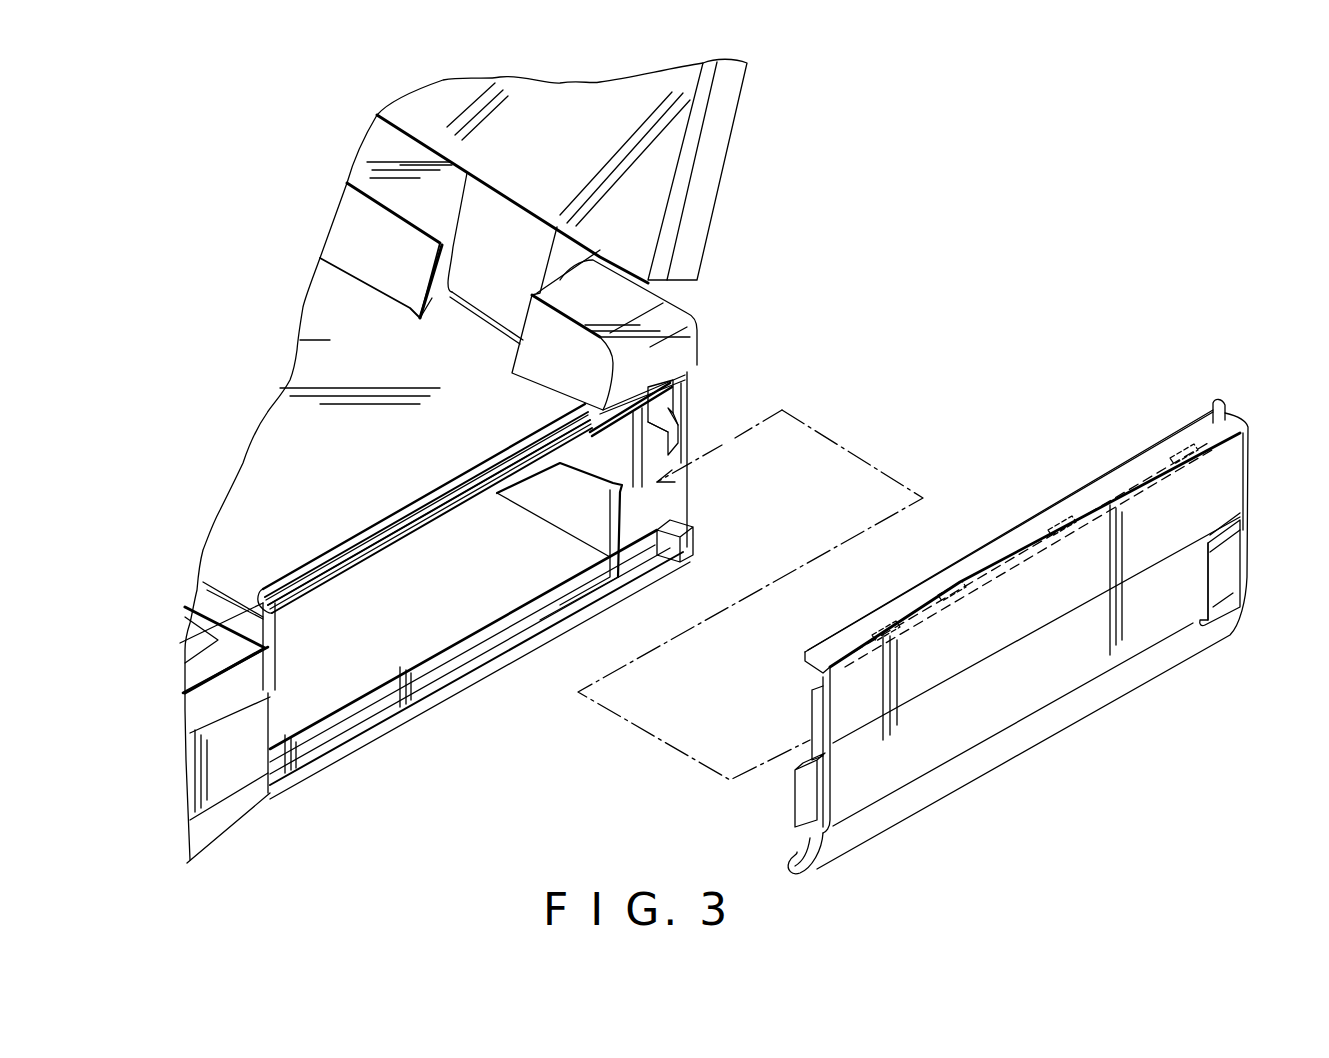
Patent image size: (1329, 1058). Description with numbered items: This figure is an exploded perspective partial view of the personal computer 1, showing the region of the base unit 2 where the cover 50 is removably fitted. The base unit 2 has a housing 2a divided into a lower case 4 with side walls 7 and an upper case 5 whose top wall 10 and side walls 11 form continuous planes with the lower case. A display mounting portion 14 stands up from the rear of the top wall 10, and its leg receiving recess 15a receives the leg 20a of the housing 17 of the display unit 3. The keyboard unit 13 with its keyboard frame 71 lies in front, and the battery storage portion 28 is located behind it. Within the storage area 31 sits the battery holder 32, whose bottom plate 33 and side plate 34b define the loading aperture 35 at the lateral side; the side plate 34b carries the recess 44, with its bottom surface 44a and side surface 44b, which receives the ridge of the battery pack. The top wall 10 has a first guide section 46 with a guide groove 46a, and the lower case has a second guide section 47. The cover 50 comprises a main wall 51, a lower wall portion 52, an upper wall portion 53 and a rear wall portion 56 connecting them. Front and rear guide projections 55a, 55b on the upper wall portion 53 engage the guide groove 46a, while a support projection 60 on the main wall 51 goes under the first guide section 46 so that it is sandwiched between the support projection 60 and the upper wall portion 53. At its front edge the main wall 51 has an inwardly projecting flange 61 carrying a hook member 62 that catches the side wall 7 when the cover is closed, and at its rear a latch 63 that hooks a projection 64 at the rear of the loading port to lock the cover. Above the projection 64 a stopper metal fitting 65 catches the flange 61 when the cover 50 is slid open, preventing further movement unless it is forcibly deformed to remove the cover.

The personal computer 1 is at (723, 223).
The base unit 2 is at (330, 780).
The housing 2a is at (220, 830).
The display unit 3 is at (740, 122).
The lower case 4 is at (200, 783).
The upper case 5 is at (223, 508).
The side walls 7 is at (240, 767).
The top wall 10 is at (357, 435).
The side walls 11 is at (263, 618).
The keyboard unit 13 is at (240, 683).
The display mounting portion 14 is at (688, 313).
The leg receiving recess 15a is at (413, 307).
The housing 17 is at (410, 103).
The leg 20a is at (513, 227).
The battery storage portion 28 is at (553, 550).
The storage area 31 is at (447, 530).
The battery holder 32 is at (523, 572).
The bottom plate 33 is at (498, 627).
The side plate 34b is at (613, 520).
The loading aperture 35 is at (437, 633).
The recess 44 is at (557, 483).
The bottom surface 44a is at (600, 477).
The side surface 44b is at (605, 410).
The first guide section 46 is at (390, 547).
The guide groove 46a is at (352, 543).
The second guide section 47 is at (377, 727).
The cover 50 is at (974, 613).
The main wall 51 is at (1130, 650).
The lower wall portion 52 is at (797, 860).
The upper wall portion 53 is at (1103, 487).
The guide projection 55a is at (897, 640).
The guide projection 55b is at (1142, 493).
The rear wall portion 56 is at (1220, 405).
The support projection 60 is at (1017, 580).
The flange 61 is at (812, 707).
The hook member 62 is at (800, 793).
The latch 63 is at (1230, 567).
The projection 64 is at (693, 543).
The stopper metal fitting 65 is at (683, 435).
The keyboard frame 71 is at (195, 677).